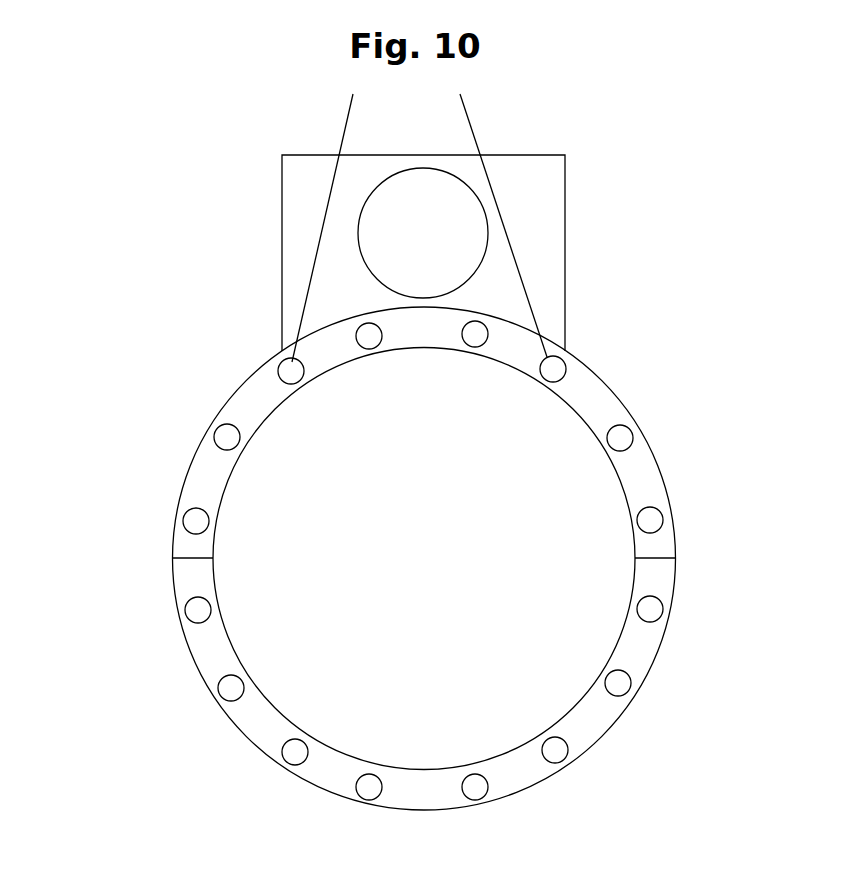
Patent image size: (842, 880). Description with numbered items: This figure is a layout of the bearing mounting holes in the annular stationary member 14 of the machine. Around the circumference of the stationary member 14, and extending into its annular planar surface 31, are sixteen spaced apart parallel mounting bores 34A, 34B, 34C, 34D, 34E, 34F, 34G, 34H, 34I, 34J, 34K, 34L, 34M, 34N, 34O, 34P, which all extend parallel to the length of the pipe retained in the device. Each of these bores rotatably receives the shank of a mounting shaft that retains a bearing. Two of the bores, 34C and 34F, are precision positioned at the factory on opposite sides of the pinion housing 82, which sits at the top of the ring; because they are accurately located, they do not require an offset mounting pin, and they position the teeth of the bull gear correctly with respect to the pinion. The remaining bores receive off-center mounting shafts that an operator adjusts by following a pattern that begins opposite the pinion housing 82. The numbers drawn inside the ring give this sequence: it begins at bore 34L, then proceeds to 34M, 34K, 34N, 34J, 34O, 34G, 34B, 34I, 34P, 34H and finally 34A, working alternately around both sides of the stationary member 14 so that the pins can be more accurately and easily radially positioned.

The pinion housing 82 is at (565, 203).
The annular stationary member 14 is at (668, 478).
The annular planar surface 31 is at (660, 572).
The mounting bore 34A is at (186, 515).
The mounting bore 34B is at (217, 434).
The mounting bore 34C is at (281, 367).
The mounting bore 34D is at (358, 330).
The mounting bore 34E is at (484, 327).
The mounting bore 34F is at (565, 365).
The mounting bore 34G is at (632, 434).
The mounting bore 34H is at (662, 517).
The mounting bore 34I is at (661, 616).
The mounting bore 34J is at (628, 692).
The mounting bore 34K is at (565, 759).
The mounting bore 34L is at (484, 797).
The mounting bore 34M is at (360, 797).
The mounting bore 34N is at (286, 760).
The mounting bore 34O is at (221, 695).
The mounting bore 34P is at (188, 617).